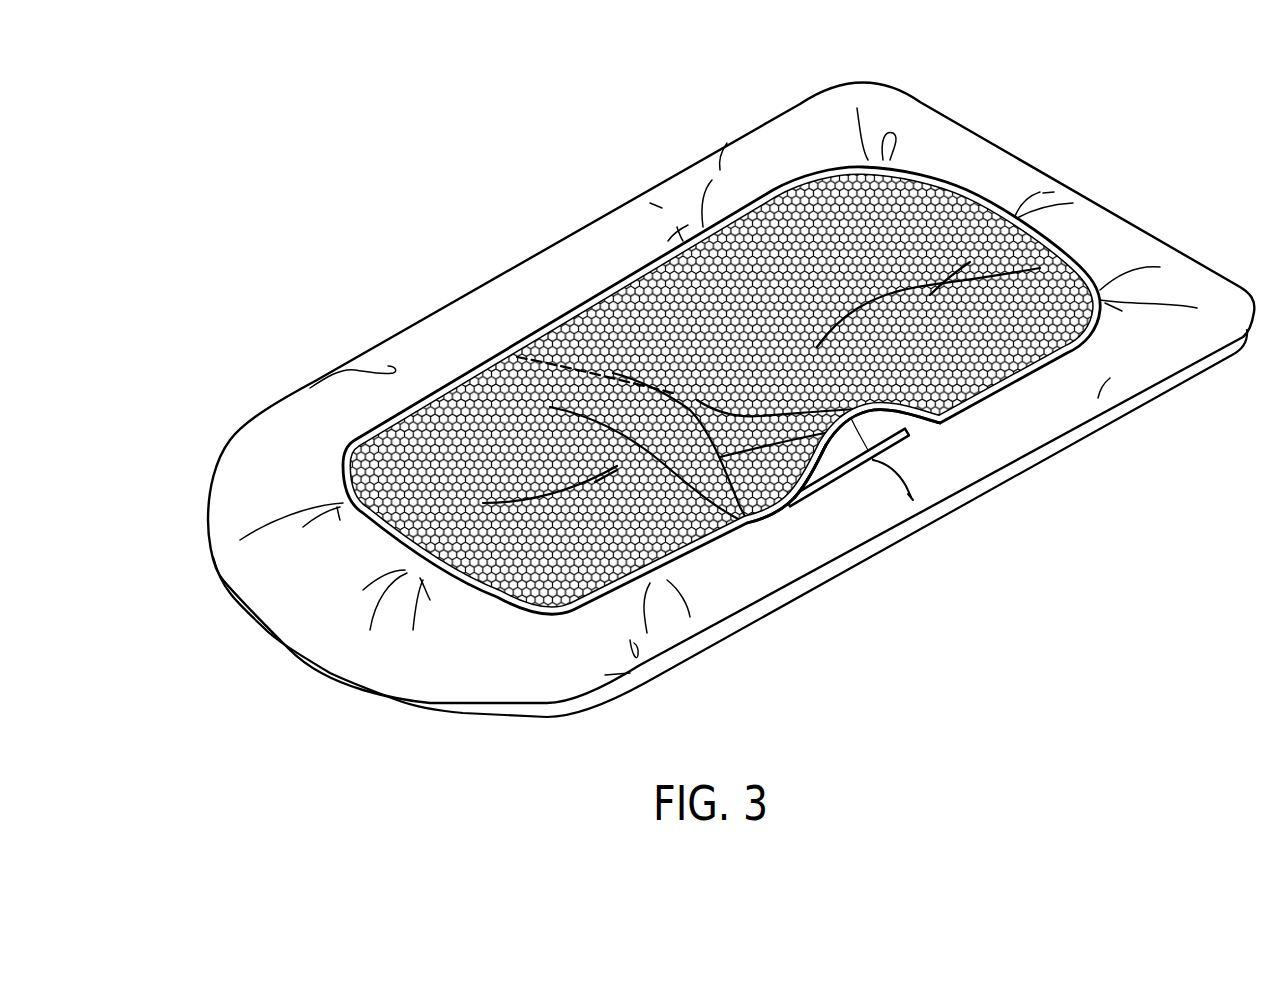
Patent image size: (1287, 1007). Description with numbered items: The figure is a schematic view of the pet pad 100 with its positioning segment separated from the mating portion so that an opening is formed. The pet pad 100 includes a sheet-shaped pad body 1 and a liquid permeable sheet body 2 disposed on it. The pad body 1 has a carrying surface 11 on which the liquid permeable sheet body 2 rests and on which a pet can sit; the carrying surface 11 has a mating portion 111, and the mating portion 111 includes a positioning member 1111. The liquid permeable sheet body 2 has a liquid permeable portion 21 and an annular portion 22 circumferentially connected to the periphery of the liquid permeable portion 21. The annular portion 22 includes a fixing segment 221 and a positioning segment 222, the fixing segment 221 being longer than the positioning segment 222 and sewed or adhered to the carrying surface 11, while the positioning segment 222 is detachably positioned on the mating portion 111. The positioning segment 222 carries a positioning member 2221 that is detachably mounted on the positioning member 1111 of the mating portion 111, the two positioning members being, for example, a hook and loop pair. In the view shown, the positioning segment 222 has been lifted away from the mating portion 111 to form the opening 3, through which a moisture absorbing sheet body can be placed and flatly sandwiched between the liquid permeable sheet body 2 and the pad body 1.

The pet pad 100 is at (338, 151).
The pad body 1 is at (701, 399).
The carrying surface 11 is at (270, 603).
The mating portion 111 is at (847, 478).
The positioning member 1111 is at (851, 418).
The liquid permeable sheet body 2 is at (746, 354).
The liquid permeable portion 21 is at (616, 268).
The annular portion 22 is at (753, 390).
The fixing segment 221 is at (521, 338).
The positioning segment 222 is at (920, 414).
The positioning member 2221 is at (850, 420).
The opening 3 is at (821, 453).